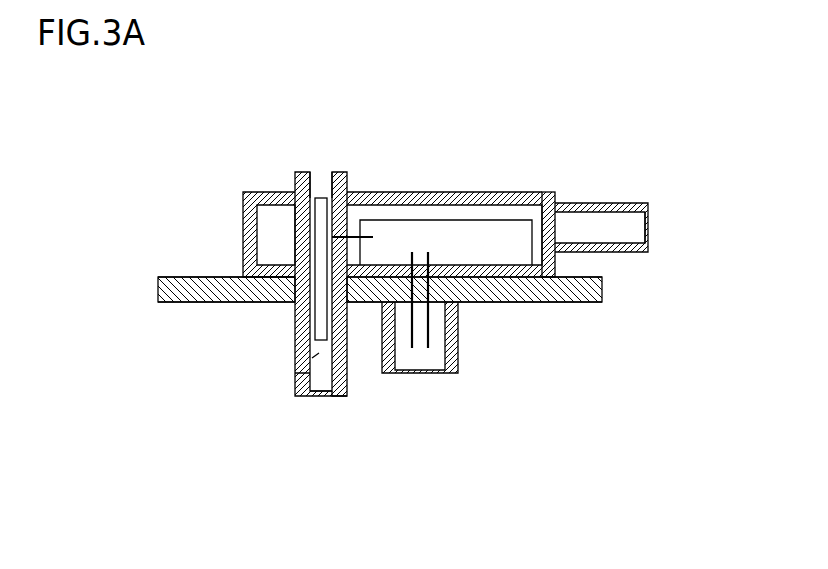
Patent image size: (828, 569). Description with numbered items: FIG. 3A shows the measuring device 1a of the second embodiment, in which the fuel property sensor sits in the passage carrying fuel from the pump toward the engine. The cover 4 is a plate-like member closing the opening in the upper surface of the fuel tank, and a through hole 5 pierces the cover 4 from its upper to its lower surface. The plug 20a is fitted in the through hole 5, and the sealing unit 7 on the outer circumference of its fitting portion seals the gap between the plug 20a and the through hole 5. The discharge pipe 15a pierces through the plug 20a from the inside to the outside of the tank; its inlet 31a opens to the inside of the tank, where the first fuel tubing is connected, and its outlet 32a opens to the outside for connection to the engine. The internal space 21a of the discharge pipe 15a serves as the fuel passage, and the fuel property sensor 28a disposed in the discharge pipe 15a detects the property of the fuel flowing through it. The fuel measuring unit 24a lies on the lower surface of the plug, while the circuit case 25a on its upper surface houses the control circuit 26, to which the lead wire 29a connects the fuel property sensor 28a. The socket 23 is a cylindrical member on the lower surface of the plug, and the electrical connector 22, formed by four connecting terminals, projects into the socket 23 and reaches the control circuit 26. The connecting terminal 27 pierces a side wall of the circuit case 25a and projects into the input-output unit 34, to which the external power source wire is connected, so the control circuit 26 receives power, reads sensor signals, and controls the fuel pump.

The measuring device 1a is at (205, 157).
The cover 4 is at (266, 288).
The through hole 5 is at (503, 285).
The sealing unit 7 is at (217, 277).
The discharge pipe 15a is at (294, 193).
The plug 20a is at (481, 311).
The internal space 21a is at (293, 373).
The electrical connector 22 is at (474, 303).
The socket 23 is at (393, 373).
The fuel measuring unit 24a is at (348, 384).
The circuit case 25a is at (553, 192).
The control circuit 26 is at (455, 237).
The connecting terminal 27 is at (518, 227).
The fuel property sensor 28a is at (293, 340).
The lead wire 29a is at (358, 235).
The inlet 31a is at (322, 388).
The outlet 32a is at (322, 183).
The input-output unit 34 is at (622, 204).